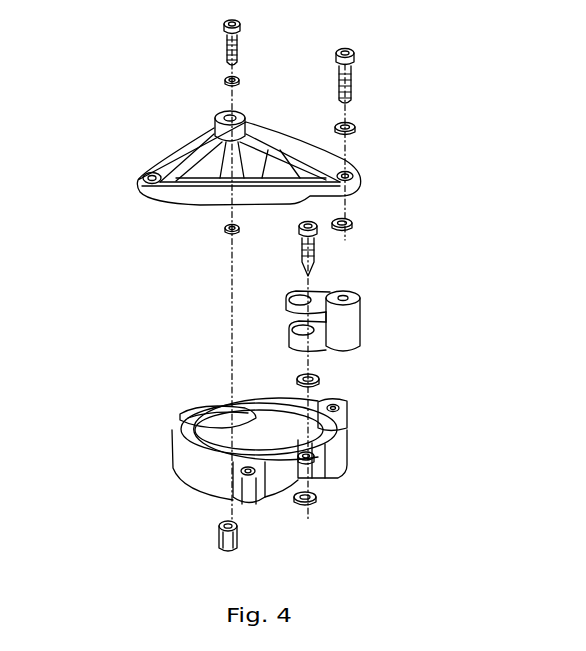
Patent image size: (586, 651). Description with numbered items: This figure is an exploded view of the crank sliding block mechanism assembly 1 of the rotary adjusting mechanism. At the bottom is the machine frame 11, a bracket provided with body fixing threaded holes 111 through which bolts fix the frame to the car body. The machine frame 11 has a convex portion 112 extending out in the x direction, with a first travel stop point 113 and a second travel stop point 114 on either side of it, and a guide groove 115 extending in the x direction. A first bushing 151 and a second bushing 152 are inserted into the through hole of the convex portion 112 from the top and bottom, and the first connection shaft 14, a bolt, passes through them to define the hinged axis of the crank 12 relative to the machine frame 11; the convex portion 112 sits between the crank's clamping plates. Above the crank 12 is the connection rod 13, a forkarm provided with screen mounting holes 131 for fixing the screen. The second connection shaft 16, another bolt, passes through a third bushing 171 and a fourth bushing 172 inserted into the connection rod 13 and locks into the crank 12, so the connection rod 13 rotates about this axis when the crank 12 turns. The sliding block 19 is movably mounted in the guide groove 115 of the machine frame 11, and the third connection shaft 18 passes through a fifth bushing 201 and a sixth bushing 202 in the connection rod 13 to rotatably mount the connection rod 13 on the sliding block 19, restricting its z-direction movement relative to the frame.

The crank sliding block mechanism assembly 1 is at (118, 268).
The machine frame 11 is at (258, 481).
The body fixing threaded holes 111 is at (340, 407).
The convex portion 112 is at (316, 462).
The first travel stop point 113 is at (347, 441).
The second travel stop point 114 is at (296, 508).
The guide groove 115 is at (198, 418).
The crank 12 is at (366, 320).
The connection rod 13 is at (273, 149).
The screen mounting holes 131 is at (222, 116).
The first connection shaft 14 is at (318, 251).
The first bushing 151 is at (320, 382).
The second bushing 152 is at (317, 503).
The second connection shaft 16 is at (352, 82).
The third bushing 171 is at (356, 129).
The fourth bushing 172 is at (354, 224).
The third connection shaft 18 is at (239, 44).
The sliding block 19 is at (220, 547).
The fifth bushing 201 is at (226, 80).
The sixth bushing 202 is at (226, 230).